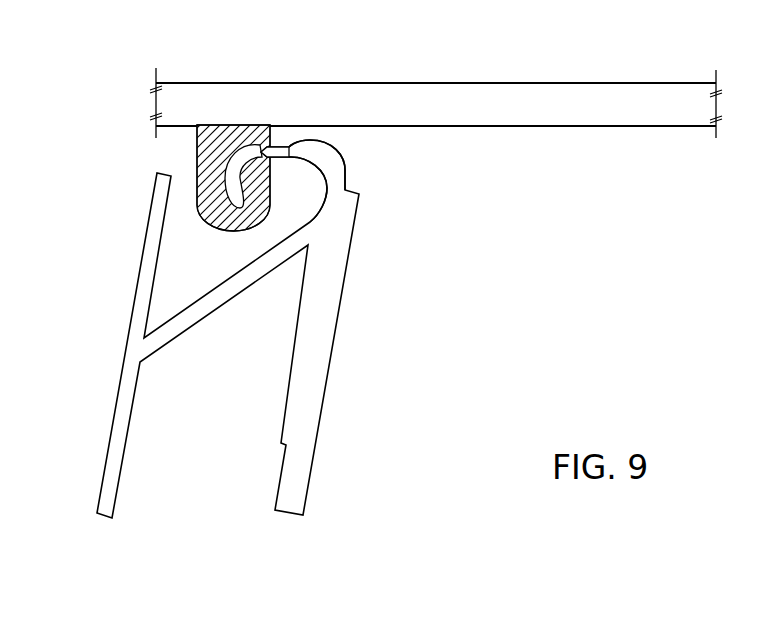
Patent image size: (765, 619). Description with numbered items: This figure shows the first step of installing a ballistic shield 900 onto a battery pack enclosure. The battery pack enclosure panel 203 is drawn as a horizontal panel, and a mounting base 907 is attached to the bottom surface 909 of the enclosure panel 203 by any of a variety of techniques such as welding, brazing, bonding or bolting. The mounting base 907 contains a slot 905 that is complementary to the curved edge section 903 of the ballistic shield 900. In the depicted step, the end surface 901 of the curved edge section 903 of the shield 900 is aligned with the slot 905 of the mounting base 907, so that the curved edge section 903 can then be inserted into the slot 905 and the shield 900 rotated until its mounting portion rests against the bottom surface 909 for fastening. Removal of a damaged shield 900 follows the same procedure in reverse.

The battery pack enclosure panel 203 is at (410, 116).
The ballistic shield 900 is at (248, 266).
The end surface 901 is at (291, 136).
The curved edge section 903 is at (356, 154).
The slot 905 is at (251, 140).
The mounting base 907 is at (197, 157).
The bottom surface 909 is at (493, 127).